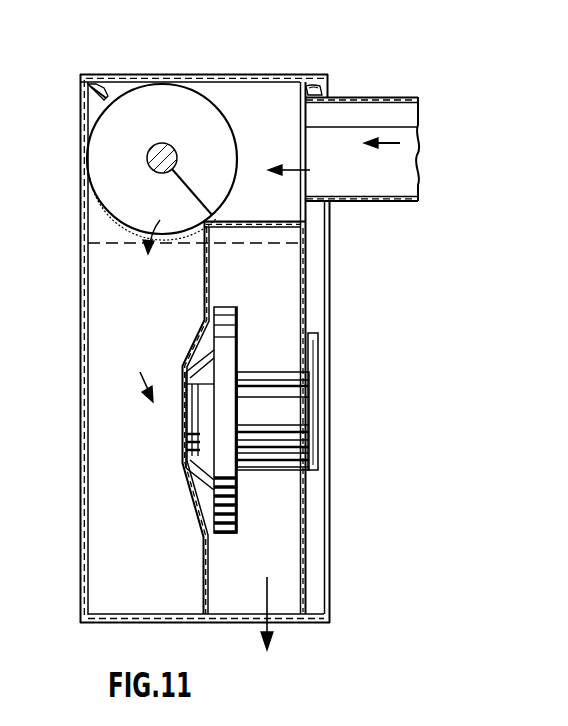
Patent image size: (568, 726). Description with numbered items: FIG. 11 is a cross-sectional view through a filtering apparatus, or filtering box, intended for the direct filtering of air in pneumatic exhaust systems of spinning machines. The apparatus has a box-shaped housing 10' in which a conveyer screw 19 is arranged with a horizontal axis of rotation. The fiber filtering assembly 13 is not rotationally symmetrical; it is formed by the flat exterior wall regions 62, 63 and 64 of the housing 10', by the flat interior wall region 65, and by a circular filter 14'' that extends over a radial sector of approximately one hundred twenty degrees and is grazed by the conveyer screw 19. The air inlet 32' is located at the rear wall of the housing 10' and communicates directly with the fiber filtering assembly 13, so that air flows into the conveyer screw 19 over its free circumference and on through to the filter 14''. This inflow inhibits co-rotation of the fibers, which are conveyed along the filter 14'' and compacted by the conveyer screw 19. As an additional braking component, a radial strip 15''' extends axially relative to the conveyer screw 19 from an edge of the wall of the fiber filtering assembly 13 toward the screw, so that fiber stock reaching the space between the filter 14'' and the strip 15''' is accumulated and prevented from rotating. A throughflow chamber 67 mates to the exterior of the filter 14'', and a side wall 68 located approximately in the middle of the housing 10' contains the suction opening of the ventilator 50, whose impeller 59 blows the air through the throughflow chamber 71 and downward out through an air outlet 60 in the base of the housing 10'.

The box-shaped housing 10' is at (187, 342).
The fiber filtering assembly 13 is at (281, 228).
The filter 14'' is at (166, 246).
The radial strip 15''' is at (111, 62).
The conveyer screw 19 is at (170, 118).
The air inlet 32' is at (360, 163).
The ventilator 50 is at (280, 404).
The impeller 59 is at (266, 407).
The air outlet 60 is at (288, 624).
The flat exterior wall region 62 is at (300, 80).
The flat exterior wall region 63 is at (80, 116).
The flat exterior wall region 64 is at (320, 90).
The flat interior wall region 65 is at (234, 230).
The throughflow chamber 67 is at (105, 290).
The side wall 68 is at (200, 268).
The throughflow chamber 71 is at (285, 542).